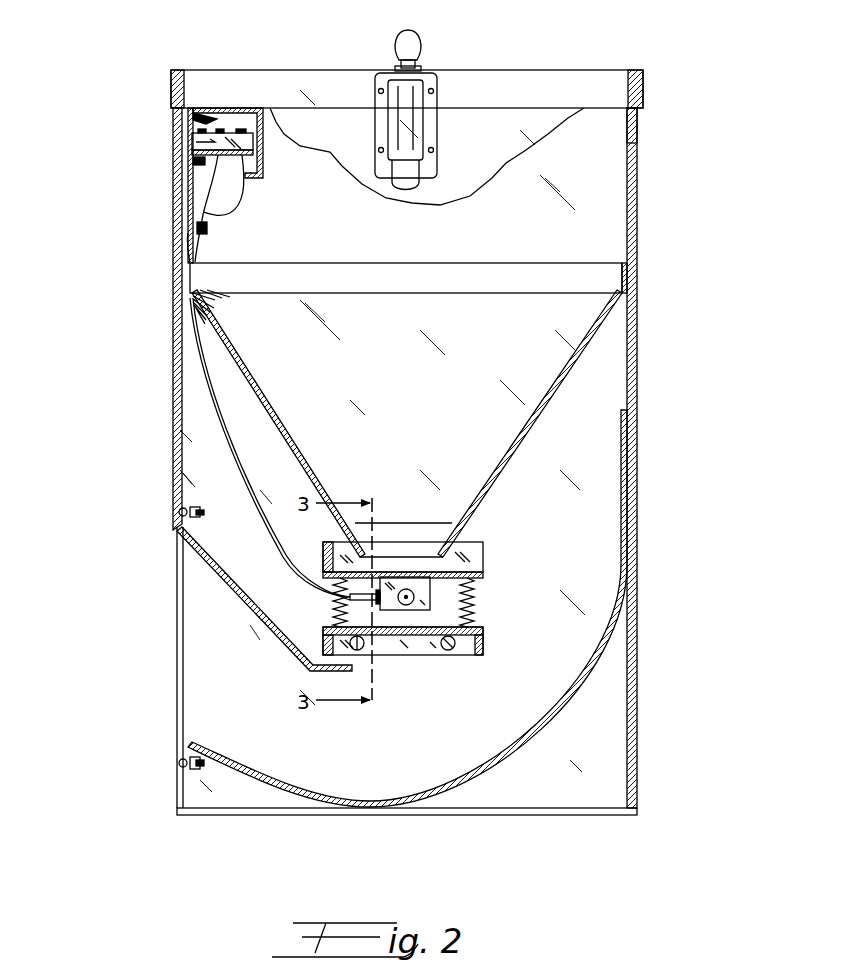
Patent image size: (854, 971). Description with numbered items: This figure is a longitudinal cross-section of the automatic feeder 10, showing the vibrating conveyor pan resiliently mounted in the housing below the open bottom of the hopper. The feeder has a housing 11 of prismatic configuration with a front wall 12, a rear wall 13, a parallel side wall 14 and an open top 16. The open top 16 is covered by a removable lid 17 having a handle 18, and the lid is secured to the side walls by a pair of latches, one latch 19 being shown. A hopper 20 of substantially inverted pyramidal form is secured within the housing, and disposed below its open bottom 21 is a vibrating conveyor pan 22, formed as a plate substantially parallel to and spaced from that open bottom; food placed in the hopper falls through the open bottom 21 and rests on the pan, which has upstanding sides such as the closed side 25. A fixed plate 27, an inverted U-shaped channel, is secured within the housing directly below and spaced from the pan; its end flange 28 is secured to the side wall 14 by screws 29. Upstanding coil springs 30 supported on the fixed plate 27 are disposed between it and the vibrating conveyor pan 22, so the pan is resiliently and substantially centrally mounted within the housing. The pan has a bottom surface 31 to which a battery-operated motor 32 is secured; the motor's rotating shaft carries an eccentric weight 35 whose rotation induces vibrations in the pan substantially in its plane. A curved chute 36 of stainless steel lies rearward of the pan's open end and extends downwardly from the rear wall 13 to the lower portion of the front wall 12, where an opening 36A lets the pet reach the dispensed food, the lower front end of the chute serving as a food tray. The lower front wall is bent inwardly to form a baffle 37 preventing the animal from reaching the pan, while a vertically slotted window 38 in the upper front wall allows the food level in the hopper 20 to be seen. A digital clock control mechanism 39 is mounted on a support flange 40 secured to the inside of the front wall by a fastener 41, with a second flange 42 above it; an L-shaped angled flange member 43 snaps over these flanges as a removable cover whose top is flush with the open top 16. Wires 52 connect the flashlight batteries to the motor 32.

The automatic feeder 10 is at (133, 66).
The housing 11 is at (172, 322).
The front wall 12 is at (173, 413).
The rear wall 13 is at (637, 380).
The side wall 14 is at (598, 795).
The open top 16 is at (631, 120).
The removable lid 17 is at (628, 74).
The handle 18 is at (416, 38).
The latch 19 is at (414, 140).
The hopper 20 is at (592, 338).
The open bottom 21 is at (452, 553).
The vibrating conveyor pan 22 is at (488, 556).
The closed side 25 is at (323, 553).
The fixed plate 27 is at (488, 648).
The end flange 28 is at (462, 656).
The screws 29 is at (447, 652).
The coil springs 30 is at (476, 613).
The bottom surface 31 is at (432, 583).
The battery-operated motor 32 is at (380, 611).
The eccentric weight 35 is at (406, 606).
The curved chute 36 is at (578, 690).
The opening 36A is at (190, 744).
The baffle 37 is at (250, 600).
The vertically slotted window 38 is at (189, 241).
The digital clock control mechanism 39 is at (192, 142).
The support flange 40 is at (203, 211).
The fastener 41 is at (192, 162).
The second flange 42 is at (192, 128).
The L-shaped angled flange member 43 is at (260, 136).
The wires 52 is at (241, 478).